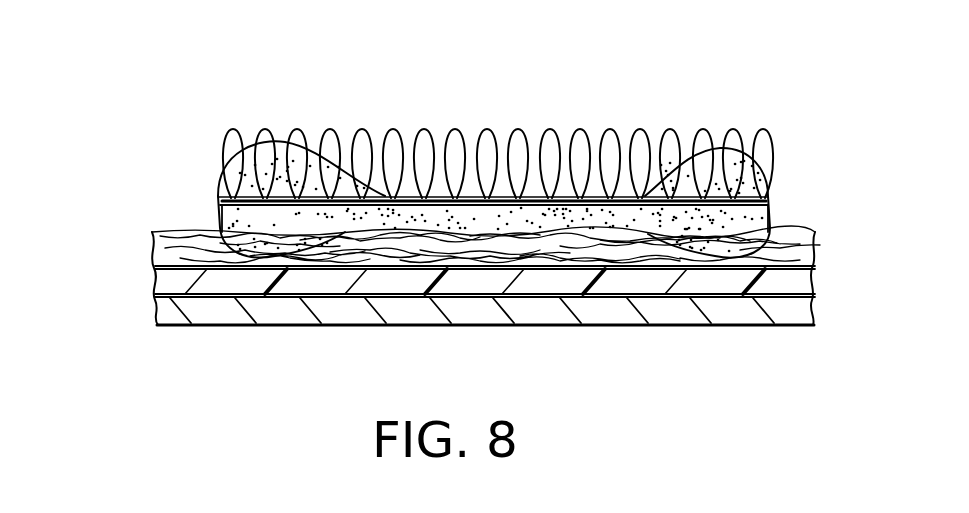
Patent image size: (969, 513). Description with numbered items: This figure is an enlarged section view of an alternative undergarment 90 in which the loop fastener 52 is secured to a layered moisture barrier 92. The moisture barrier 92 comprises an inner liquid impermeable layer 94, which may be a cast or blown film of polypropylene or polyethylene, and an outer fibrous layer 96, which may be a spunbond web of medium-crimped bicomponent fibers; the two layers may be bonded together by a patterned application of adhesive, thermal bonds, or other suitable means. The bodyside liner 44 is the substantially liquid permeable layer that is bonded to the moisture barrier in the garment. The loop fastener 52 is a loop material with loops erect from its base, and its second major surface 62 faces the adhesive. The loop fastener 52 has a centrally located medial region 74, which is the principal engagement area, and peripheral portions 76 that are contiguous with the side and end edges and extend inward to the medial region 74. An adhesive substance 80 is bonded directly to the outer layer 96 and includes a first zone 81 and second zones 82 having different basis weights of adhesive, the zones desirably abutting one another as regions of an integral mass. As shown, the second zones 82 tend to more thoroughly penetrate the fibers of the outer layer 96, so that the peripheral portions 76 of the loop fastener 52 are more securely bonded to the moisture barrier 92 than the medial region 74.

The bodyside liner 44 is at (470, 318).
The loop fastener 52 is at (396, 116).
The second major surface 62 is at (665, 130).
The medial region 74 is at (603, 132).
The peripheral portions 76 is at (260, 114).
The adhesive substance 80 is at (215, 183).
The first zone 81 is at (500, 220).
The second zone 82 is at (213, 250).
The undergarment 90 is at (162, 224).
The moisture barrier 92 is at (243, 308).
The inner liquid impermeable layer 94 is at (715, 282).
The outer fibrous layer 96 is at (765, 232).